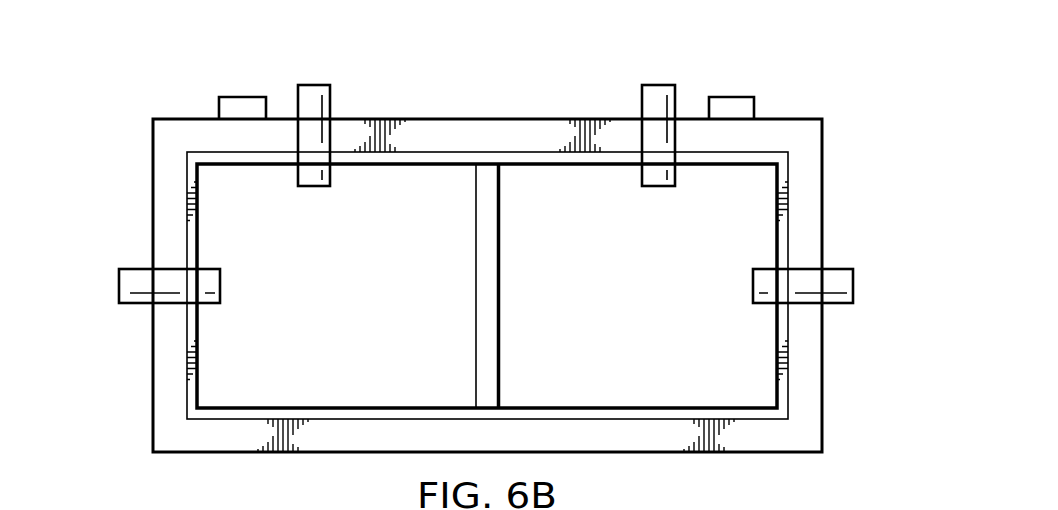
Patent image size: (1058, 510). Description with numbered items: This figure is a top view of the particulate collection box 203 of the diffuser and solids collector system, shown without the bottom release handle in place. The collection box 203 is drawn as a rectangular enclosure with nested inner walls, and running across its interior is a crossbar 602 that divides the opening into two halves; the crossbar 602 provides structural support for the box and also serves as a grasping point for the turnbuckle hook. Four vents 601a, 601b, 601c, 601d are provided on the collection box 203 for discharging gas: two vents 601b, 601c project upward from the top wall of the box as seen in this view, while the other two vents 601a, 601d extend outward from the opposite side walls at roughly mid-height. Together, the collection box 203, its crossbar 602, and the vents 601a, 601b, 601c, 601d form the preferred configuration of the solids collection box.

The particulate collection box 203 is at (495, 118).
The vent 601a is at (119, 283).
The vent 601b is at (313, 85).
The vent 601c is at (658, 85).
The vent 601d is at (855, 283).
The crossbar 602 is at (500, 285).